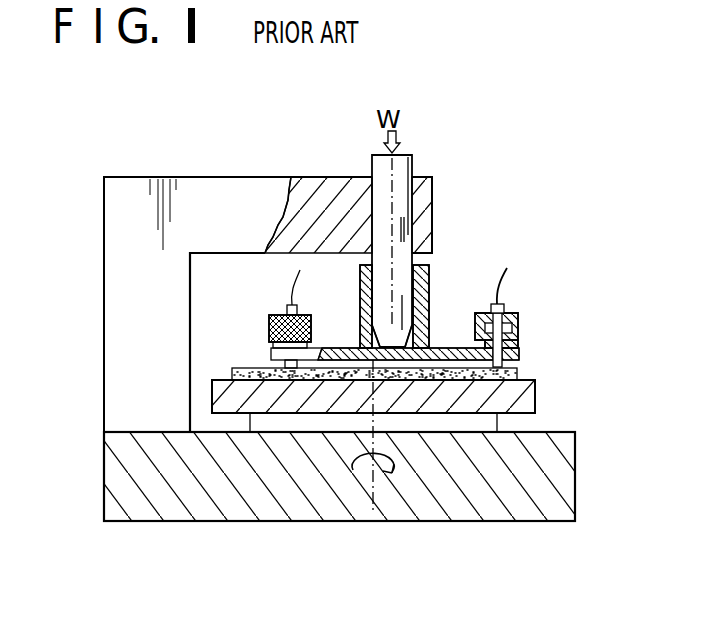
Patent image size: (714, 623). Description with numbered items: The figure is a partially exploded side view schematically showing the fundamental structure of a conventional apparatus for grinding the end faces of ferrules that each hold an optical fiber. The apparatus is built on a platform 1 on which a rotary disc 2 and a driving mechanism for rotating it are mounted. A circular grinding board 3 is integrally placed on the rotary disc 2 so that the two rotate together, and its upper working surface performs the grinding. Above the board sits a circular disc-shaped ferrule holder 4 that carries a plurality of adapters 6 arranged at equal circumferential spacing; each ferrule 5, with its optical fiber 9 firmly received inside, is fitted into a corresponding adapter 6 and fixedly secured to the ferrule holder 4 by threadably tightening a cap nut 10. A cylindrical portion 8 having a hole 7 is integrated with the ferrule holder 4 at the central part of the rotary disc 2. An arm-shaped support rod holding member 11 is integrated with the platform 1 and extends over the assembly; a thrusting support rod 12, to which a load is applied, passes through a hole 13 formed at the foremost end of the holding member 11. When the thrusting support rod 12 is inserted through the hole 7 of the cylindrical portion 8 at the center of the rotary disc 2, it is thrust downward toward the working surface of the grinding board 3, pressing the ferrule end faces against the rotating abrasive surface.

The platform 1 is at (560, 485).
The rotary disc 2 is at (537, 407).
The circular grinding board 3 is at (518, 370).
The ferrule holder 4 is at (519, 355).
The ferrule 5 is at (498, 318).
The adapter 6 is at (520, 330).
The hole 7 is at (427, 272).
The cylindrical portion 8 is at (425, 316).
The optical fiber 9 is at (507, 272).
The cap nut 10 is at (268, 322).
The support rod holding member 11 is at (245, 190).
The thrusting support rod 12 is at (400, 168).
The hole 13 is at (408, 203).